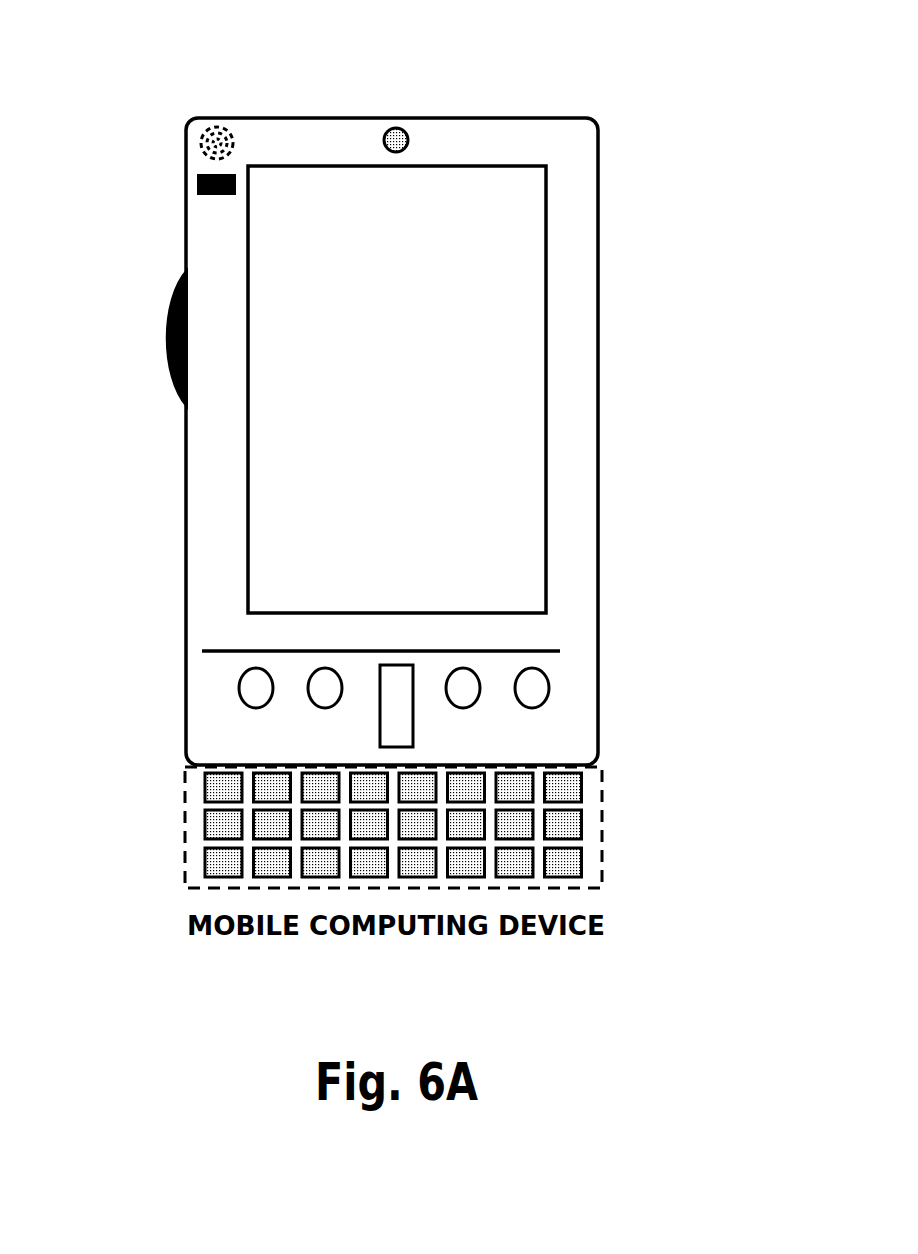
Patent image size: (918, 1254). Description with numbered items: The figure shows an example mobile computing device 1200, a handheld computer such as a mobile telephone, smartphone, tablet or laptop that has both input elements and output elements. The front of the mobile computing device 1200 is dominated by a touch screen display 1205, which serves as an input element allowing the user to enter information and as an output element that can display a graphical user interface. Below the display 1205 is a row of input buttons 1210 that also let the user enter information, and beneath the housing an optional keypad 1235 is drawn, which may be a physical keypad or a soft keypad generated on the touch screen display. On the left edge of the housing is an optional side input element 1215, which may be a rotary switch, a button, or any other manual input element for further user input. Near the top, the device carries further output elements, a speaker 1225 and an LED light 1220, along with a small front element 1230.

The mobile computing device 1200 is at (601, 128).
The touch screen display 1205 is at (272, 549).
The buttons 1210 is at (532, 698).
The side input element 1215 is at (163, 345).
The LED light 1220 is at (197, 178).
The speaker 1225 is at (199, 136).
The camera 1230 is at (408, 131).
The keypad 1235 is at (185, 860).